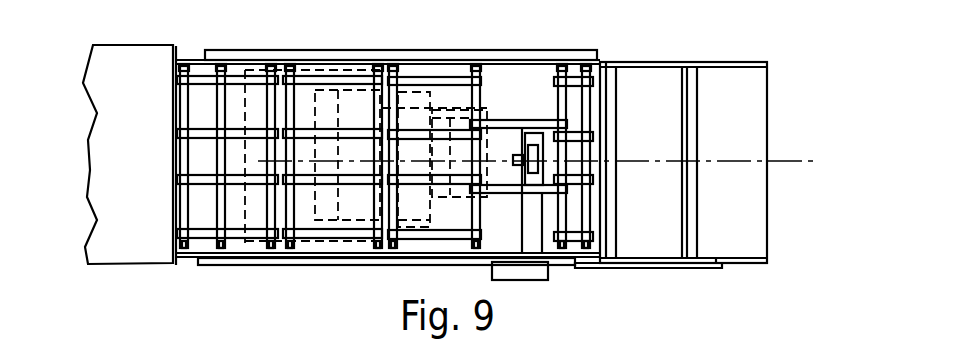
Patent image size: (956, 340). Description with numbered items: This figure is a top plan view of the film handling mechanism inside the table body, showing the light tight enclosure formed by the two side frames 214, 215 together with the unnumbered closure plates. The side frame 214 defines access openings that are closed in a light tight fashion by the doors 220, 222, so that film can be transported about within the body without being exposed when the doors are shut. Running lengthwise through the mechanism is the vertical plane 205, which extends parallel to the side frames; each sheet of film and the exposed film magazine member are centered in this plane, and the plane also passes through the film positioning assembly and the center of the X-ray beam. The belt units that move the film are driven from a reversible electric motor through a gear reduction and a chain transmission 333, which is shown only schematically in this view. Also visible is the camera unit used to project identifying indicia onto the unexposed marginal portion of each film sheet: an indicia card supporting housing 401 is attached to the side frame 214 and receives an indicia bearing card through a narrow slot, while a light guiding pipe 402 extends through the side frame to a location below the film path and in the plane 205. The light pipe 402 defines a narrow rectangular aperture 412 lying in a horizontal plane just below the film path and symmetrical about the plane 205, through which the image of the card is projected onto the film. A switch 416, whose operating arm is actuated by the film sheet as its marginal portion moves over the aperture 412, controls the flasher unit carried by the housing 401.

The vertical plane 205 is at (624, 162).
The side frame 214 is at (307, 254).
The side frame 215 is at (607, 63).
The door 220 is at (392, 262).
The door 222 is at (643, 266).
The chain transmission 333 is at (265, 52).
The indicia card supporting housing 401 is at (539, 283).
The light guiding pipe 402 is at (533, 212).
The aperture 412 is at (537, 133).
The switch 416 is at (515, 161).